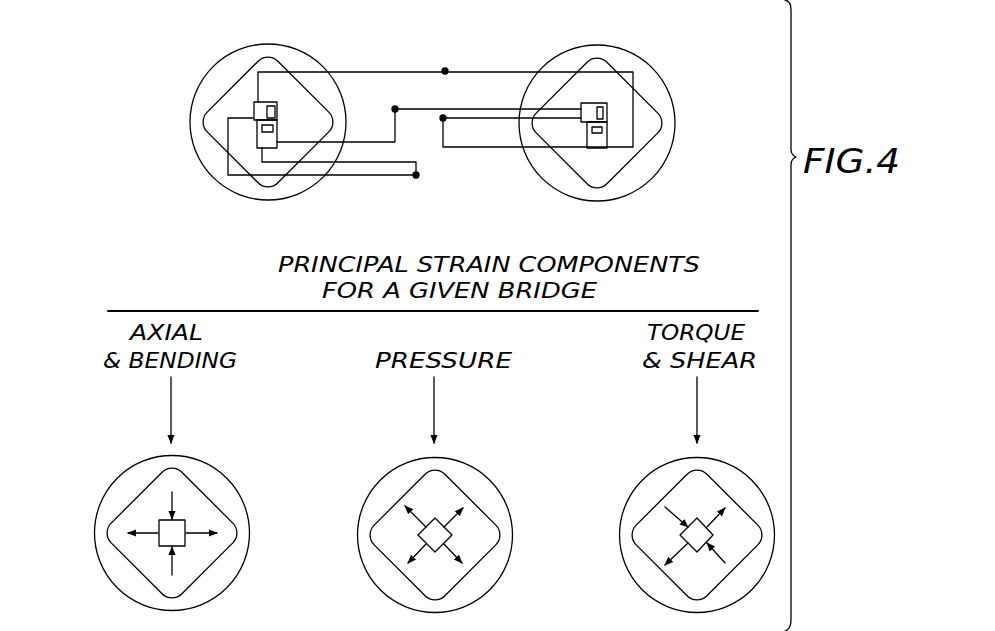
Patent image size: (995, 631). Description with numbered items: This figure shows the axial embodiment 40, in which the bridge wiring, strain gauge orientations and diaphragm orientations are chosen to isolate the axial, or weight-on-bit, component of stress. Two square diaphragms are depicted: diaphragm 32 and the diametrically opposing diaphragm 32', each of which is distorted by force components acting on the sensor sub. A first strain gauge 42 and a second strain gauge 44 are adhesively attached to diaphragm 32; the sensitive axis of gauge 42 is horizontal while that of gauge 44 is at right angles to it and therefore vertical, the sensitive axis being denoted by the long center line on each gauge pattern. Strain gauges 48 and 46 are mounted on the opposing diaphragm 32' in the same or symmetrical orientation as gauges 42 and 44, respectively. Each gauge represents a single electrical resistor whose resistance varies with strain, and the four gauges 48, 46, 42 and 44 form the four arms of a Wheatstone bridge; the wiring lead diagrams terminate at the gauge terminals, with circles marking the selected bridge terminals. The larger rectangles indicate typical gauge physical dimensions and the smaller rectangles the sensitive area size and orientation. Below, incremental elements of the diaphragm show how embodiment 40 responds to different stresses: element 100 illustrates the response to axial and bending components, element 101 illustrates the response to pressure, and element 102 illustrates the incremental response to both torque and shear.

The axial embodiment 40 is at (394, 53).
The diaphragm 32 is at (244, 122).
The diametrically opposing diaphragm 32' is at (620, 123).
The first strain gauge 42 is at (280, 110).
The second strain gauge 44 is at (258, 142).
The strain gauge 46 is at (588, 148).
The strain gauge 48 is at (612, 107).
The incremental element 100 is at (185, 525).
The incremental element 101 is at (447, 520).
The incremental element 102 is at (700, 522).